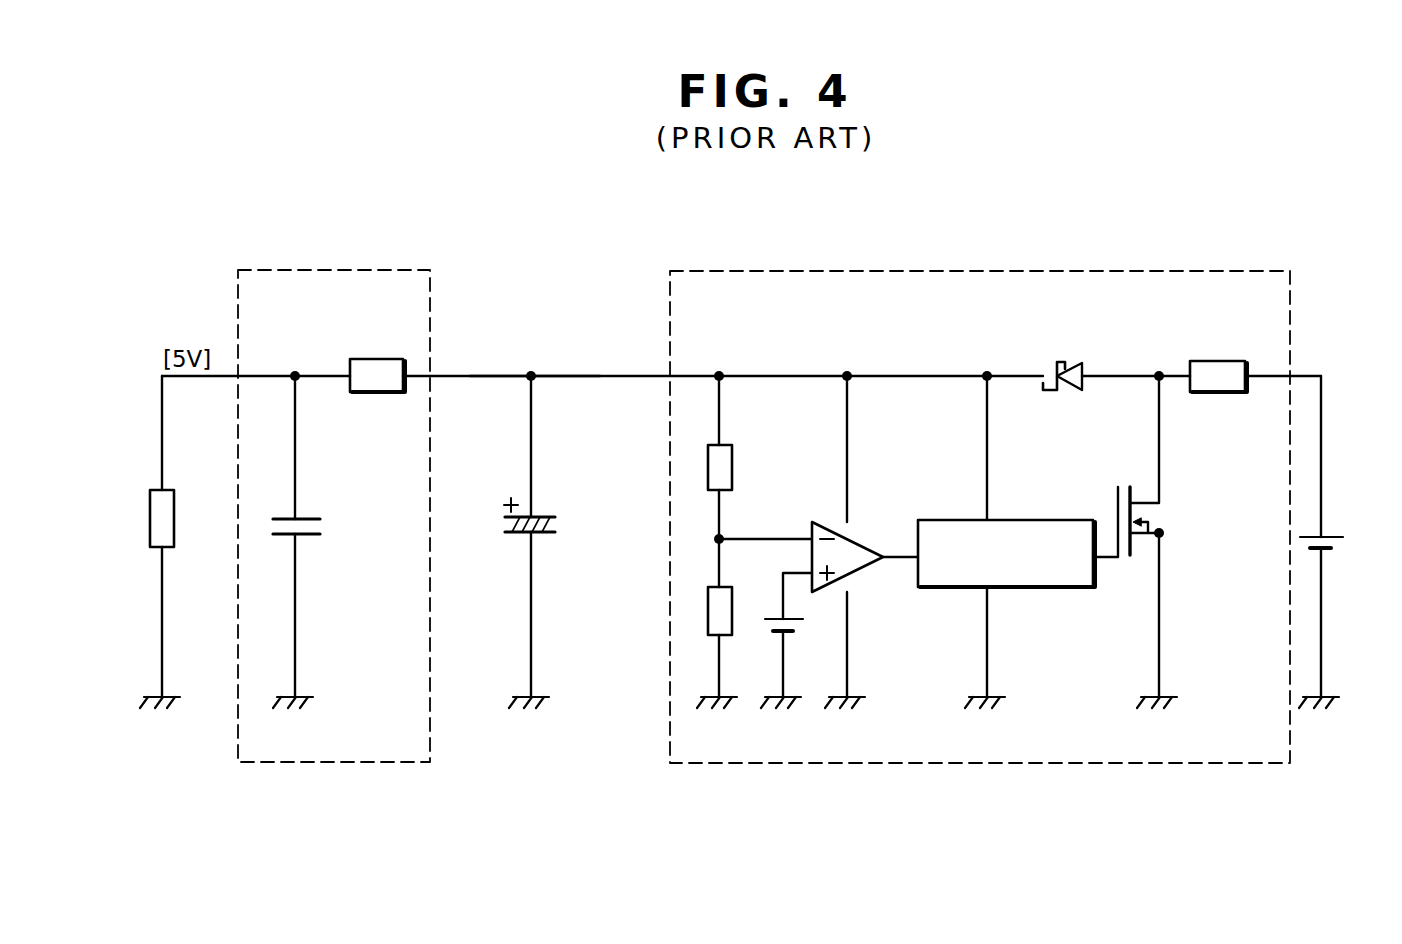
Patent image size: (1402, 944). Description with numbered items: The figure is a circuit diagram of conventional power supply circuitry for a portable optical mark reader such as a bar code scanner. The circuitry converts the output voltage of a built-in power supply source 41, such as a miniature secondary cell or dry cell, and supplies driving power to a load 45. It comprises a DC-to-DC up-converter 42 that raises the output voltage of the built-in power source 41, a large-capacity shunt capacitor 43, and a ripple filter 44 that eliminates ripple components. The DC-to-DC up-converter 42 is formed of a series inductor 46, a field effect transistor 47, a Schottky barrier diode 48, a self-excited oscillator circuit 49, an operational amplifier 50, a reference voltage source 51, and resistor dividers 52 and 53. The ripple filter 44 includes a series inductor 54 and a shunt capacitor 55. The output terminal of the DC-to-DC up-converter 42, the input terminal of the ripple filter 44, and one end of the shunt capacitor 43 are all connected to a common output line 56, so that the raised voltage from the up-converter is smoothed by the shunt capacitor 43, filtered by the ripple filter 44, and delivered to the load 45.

The built-in power supply source 41 is at (1330, 537).
The DC-to-DC up-converter 42 is at (1167, 270).
The shunt capacitor 43 is at (545, 517).
The ripple filter 44 is at (390, 268).
The load 45 is at (174, 503).
The series inductor 46 is at (1222, 360).
The field effect transistor 47 is at (1163, 538).
The Schottky barrier diode 48 is at (1058, 393).
The self-excited oscillator circuit 49 is at (1014, 520).
The operational amplifier 50 is at (862, 540).
The reference voltage source 51 is at (780, 618).
The resistor divider 52 is at (732, 462).
The resistor divider 53 is at (725, 634).
The series inductor 54 is at (372, 359).
The shunt capacitor 55 is at (313, 519).
The output line 56 is at (497, 375).